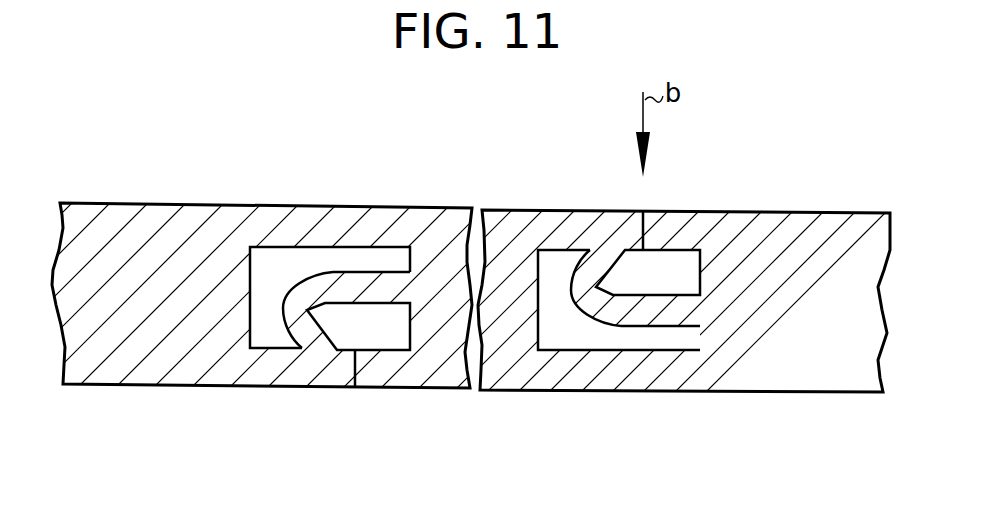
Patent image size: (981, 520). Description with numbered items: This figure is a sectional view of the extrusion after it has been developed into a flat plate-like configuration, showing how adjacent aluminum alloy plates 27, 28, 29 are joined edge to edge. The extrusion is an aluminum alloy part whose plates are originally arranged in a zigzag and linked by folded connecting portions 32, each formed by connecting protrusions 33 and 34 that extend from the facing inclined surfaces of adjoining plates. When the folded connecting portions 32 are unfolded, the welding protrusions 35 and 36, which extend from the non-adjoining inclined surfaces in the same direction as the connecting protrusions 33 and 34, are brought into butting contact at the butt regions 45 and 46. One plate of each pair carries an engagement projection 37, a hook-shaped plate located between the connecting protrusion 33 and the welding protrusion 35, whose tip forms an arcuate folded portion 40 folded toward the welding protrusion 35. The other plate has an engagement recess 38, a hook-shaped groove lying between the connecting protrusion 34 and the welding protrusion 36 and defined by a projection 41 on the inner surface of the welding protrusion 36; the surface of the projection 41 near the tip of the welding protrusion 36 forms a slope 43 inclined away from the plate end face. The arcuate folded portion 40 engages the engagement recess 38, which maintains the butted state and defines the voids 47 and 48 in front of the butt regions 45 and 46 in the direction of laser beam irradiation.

The aluminum alloy plate 27 is at (826, 201).
The aluminum alloy plate 28 is at (448, 197).
The aluminum alloy plate 29 is at (130, 194).
The folded connecting portion 32 is at (355, 222).
The connecting protrusion 33 is at (390, 222).
The connecting protrusion 34 is at (285, 217).
The welding protrusion 35 is at (382, 367).
The welding protrusion 36 is at (315, 368).
The engagement projection 37 is at (280, 260).
The engagement recess 38 is at (306, 331).
The arcuate folded portion 40 is at (293, 317).
The projection 41 is at (327, 255).
The slope 43 is at (412, 330).
The butt region 45 is at (644, 212).
The butt region 46 is at (355, 390).
The void 47 is at (701, 271).
The void 48 is at (412, 315).